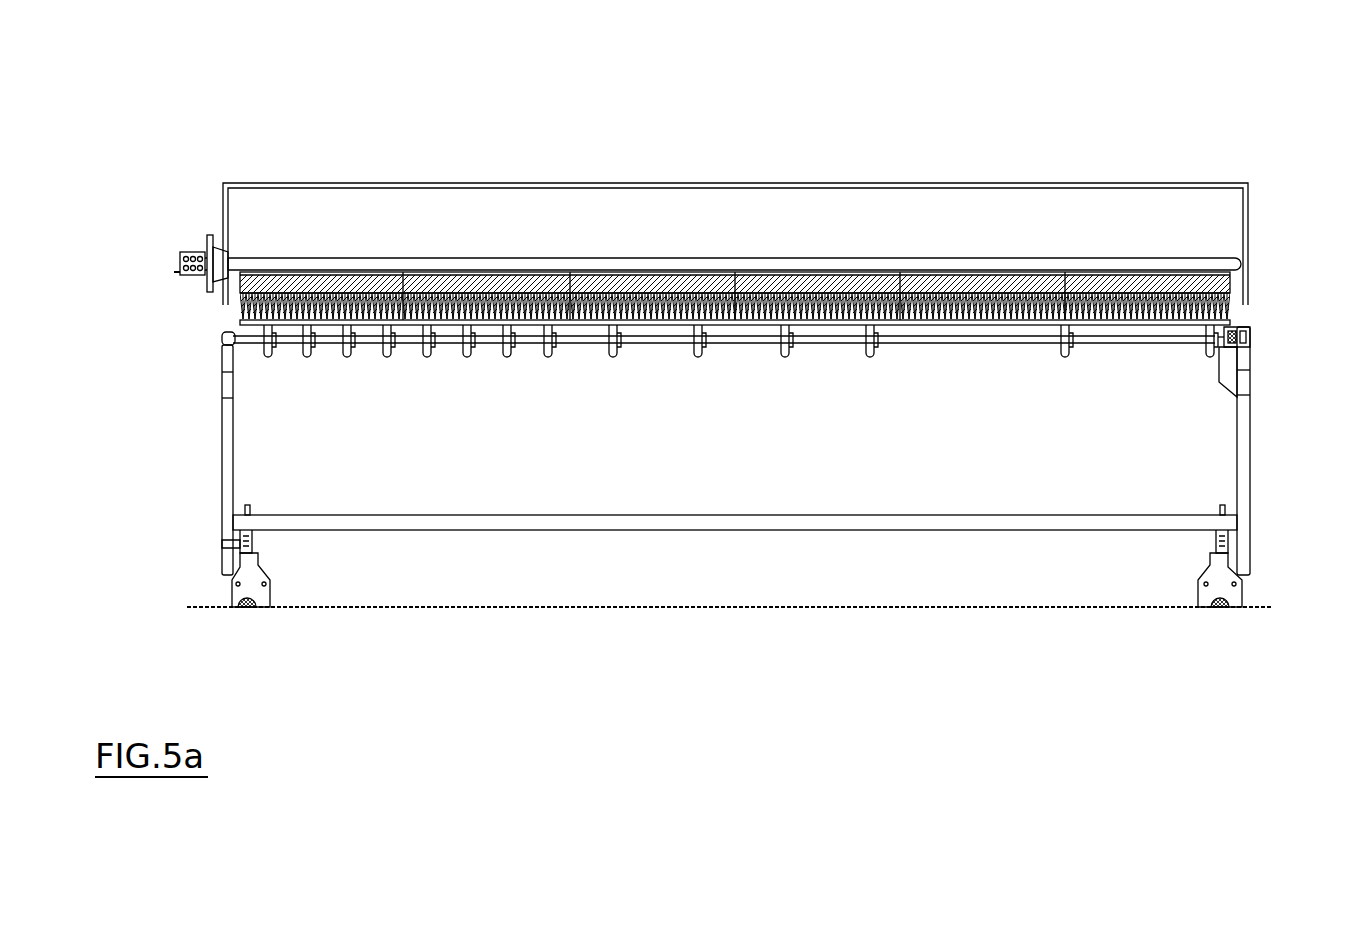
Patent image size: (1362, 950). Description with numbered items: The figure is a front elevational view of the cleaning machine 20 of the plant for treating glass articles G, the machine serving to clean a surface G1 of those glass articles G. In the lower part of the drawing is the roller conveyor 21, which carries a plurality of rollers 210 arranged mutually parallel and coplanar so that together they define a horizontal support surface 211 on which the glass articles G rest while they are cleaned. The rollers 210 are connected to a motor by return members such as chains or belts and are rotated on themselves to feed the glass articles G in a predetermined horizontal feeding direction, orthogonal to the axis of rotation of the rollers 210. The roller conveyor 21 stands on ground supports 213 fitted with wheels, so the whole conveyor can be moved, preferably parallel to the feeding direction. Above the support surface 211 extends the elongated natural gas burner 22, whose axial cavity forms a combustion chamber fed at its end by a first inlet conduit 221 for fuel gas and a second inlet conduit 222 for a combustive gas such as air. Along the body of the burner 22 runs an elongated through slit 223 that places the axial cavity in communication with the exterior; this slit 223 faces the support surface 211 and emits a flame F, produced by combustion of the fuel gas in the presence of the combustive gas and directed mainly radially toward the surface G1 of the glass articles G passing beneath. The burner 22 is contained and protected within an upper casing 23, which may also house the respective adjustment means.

The cleaning machine 20 is at (938, 660).
The roller conveyor 21 is at (222, 333).
The rollers 210 is at (698, 357).
The horizontal support surface 211 is at (402, 320).
The ground supports 213 is at (222, 470).
The natural gas burner 22 is at (288, 262).
The first inlet conduit 221 is at (205, 250).
The second inlet conduit 222 is at (180, 252).
The elongated through slit 223 is at (330, 272).
The upper casing 23 is at (1248, 205).
The flame F is at (458, 275).
The glass articles G is at (772, 325).
The surface of the glass articles G1 is at (762, 270).